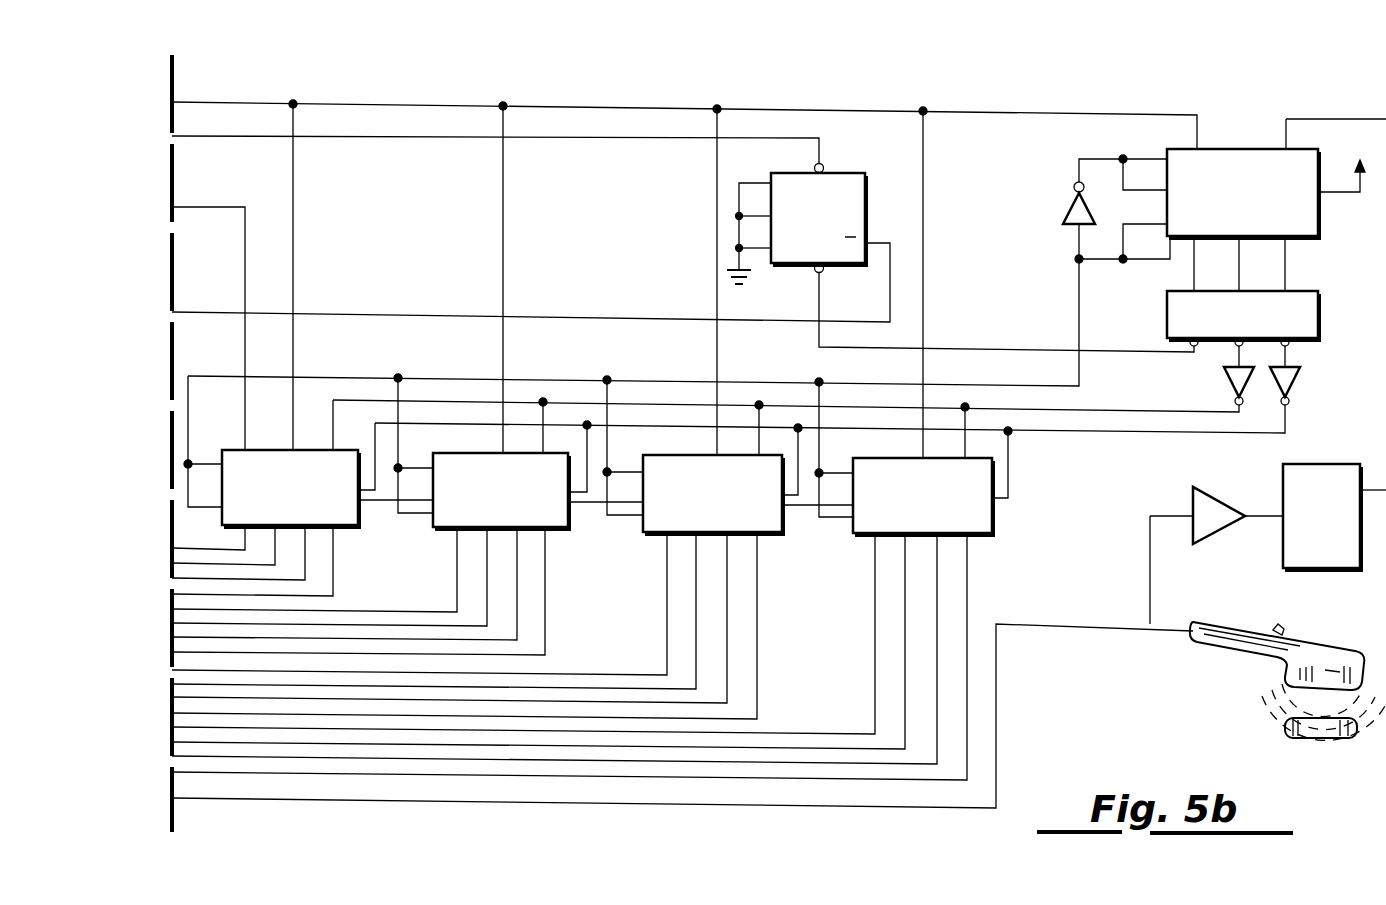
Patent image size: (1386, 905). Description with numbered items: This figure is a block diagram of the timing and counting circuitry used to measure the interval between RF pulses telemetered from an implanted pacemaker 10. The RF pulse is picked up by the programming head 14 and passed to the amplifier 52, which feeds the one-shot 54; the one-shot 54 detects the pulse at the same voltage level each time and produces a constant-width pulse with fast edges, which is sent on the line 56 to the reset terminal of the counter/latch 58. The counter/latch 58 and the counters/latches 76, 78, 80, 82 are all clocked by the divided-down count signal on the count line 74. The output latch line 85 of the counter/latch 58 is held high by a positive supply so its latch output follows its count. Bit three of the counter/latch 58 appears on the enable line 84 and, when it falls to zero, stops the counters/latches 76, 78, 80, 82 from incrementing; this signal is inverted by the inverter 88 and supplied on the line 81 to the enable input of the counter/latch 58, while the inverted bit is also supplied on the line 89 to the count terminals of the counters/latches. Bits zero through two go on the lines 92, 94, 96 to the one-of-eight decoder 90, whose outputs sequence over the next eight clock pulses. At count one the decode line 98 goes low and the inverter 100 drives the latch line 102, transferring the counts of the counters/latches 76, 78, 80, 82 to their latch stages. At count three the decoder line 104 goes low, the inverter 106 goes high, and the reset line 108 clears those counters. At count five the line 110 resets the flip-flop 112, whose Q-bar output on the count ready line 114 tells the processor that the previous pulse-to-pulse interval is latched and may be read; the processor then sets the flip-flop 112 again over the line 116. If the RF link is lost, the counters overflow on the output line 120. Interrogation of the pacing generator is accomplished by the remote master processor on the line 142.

The implanted pacemaker 10 is at (1283, 727).
The programming head 14 is at (1258, 655).
The amplifier 52 is at (1218, 535).
The one-shot multivibrator 54 is at (1322, 572).
The reset line 56 is at (1385, 436).
The counter/latch 58 is at (1238, 146).
The count line 74 is at (1030, 112).
The counter/latch 76 is at (360, 520).
The counter/latch 78 is at (570, 522).
The counter/latch 80 is at (784, 525).
The counter/latch 82 is at (994, 528).
The enable line 81 is at (1076, 168).
The enable line 84 is at (1078, 288).
The output latch line 85 is at (1322, 195).
The inverter 88 is at (1063, 213).
The count terminal line 89 is at (1097, 262).
The one-of-eight decoder 90 is at (1322, 320).
The decoder input line 92 is at (1301, 266).
The decoder input line 94 is at (1255, 266).
The decoder input line 96 is at (1210, 266).
The decode line 98 is at (1292, 352).
The inverter 100 is at (1297, 386).
The latch line 102 is at (1178, 435).
The decoder line 104 is at (1232, 356).
The inverter 106 is at (1233, 384).
The reset line 108 is at (1043, 413).
The flip-flop reset line 110 is at (1110, 351).
The flip-flop 112 is at (845, 170).
The count ready line 114 is at (430, 313).
The set line 116 is at (762, 136).
The overflow output line 120 is at (192, 207).
The interrogation line 142 is at (630, 804).